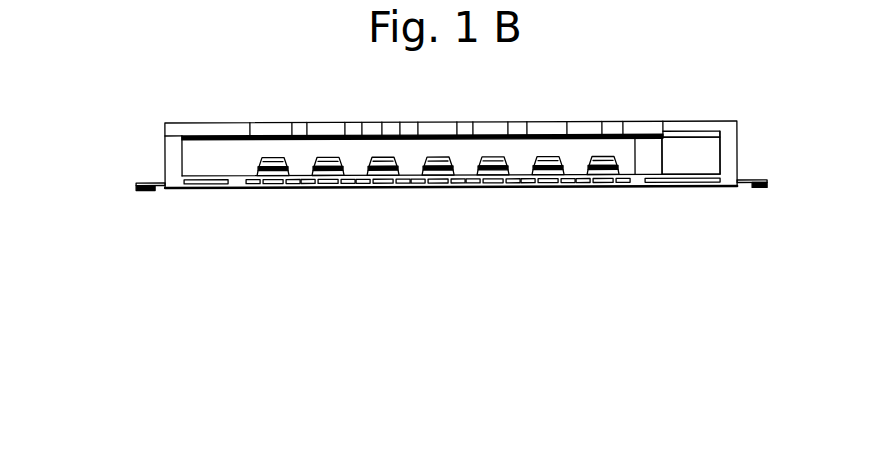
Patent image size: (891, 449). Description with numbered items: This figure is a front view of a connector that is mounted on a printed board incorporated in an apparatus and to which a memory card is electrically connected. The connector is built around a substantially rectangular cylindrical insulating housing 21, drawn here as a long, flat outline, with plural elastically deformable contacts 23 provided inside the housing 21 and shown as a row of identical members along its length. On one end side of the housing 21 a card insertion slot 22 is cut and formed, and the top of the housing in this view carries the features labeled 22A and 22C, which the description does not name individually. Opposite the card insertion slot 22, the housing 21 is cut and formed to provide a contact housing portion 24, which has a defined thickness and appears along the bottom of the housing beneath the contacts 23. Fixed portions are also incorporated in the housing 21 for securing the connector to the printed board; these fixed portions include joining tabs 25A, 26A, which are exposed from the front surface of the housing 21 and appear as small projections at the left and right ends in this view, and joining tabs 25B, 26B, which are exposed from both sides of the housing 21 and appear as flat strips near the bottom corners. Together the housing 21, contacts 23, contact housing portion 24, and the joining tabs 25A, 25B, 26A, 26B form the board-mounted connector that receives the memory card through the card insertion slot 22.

The insulating housing 21 is at (229, 151).
The card insertion slot 22 is at (713, 150).
The cover plate 22A is at (401, 157).
The cover segments 22C is at (287, 123).
The contacts 23 is at (491, 155).
The contact housing portion 24 is at (240, 187).
The joining tab 25A is at (752, 178).
The joining tab 25B is at (680, 187).
The joining tab 26A is at (137, 181).
The joining tab 26B is at (205, 187).